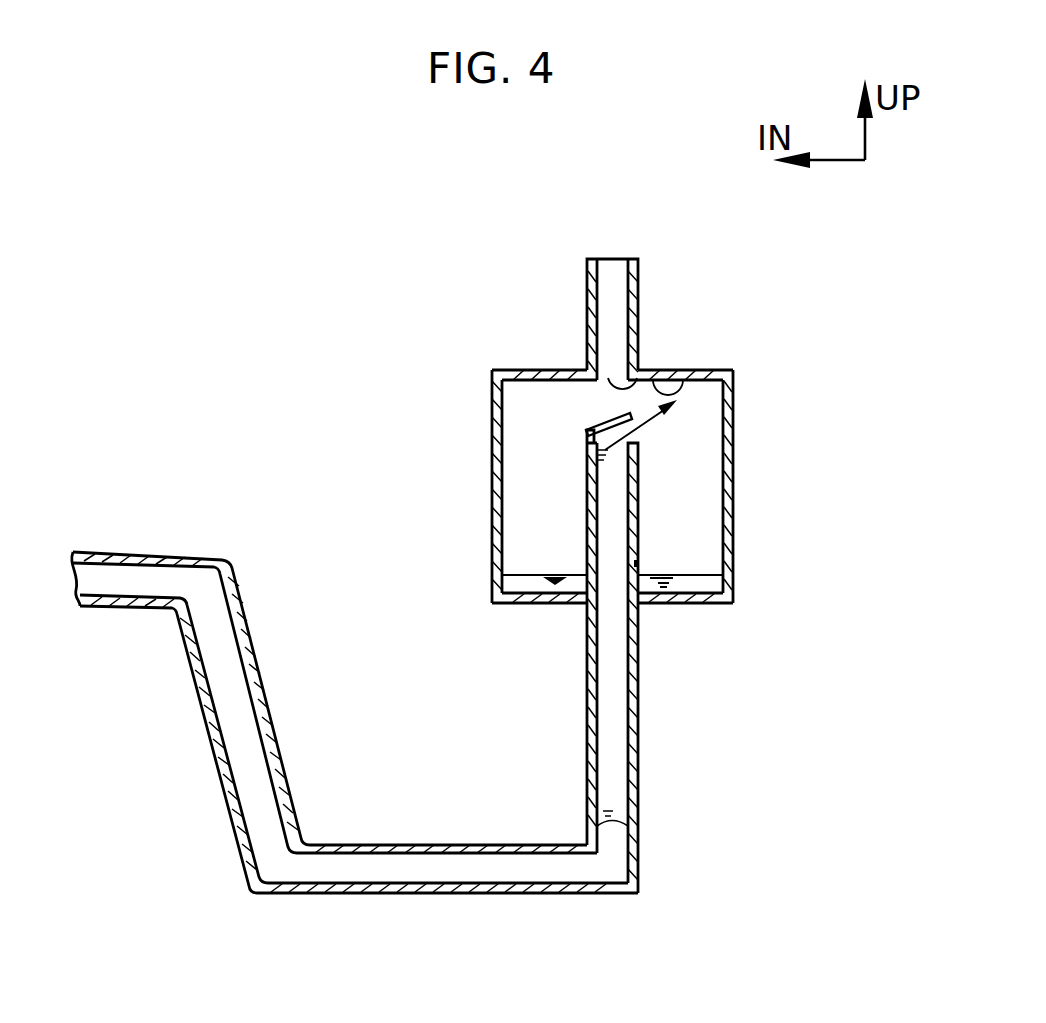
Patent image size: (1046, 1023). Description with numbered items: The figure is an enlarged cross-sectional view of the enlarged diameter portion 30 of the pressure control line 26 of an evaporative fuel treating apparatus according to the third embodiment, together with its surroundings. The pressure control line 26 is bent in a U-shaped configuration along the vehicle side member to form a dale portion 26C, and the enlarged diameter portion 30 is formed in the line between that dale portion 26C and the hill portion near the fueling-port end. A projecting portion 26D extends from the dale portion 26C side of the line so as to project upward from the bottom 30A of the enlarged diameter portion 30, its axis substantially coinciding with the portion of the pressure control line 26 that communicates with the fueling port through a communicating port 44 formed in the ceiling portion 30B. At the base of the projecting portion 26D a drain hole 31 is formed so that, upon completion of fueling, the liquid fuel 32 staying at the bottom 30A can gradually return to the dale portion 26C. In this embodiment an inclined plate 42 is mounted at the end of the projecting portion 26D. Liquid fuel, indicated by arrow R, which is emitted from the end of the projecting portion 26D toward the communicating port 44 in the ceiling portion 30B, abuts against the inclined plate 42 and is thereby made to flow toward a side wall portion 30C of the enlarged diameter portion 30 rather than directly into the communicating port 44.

The pressure control line 26 is at (587, 314).
The dale portion 26C is at (468, 845).
The projecting portion 26D is at (640, 510).
The enlarged diameter portion 30 is at (491, 540).
The bottom 30A is at (674, 590).
The ceiling portion 30B is at (688, 370).
The side wall portion 30C is at (735, 400).
The drain hole 31 is at (638, 567).
The liquid fuel 32 is at (517, 575).
The inclined plate 42 is at (604, 424).
The communicating port 44 is at (640, 373).
The liquid fuel flow direction R is at (608, 461).